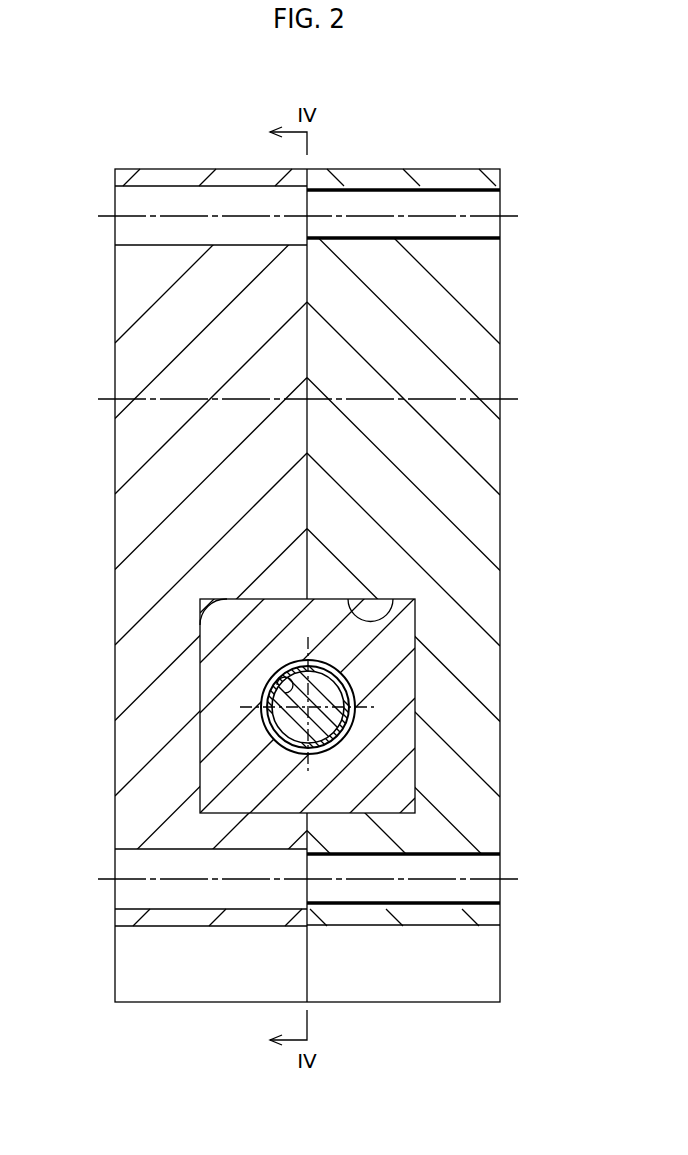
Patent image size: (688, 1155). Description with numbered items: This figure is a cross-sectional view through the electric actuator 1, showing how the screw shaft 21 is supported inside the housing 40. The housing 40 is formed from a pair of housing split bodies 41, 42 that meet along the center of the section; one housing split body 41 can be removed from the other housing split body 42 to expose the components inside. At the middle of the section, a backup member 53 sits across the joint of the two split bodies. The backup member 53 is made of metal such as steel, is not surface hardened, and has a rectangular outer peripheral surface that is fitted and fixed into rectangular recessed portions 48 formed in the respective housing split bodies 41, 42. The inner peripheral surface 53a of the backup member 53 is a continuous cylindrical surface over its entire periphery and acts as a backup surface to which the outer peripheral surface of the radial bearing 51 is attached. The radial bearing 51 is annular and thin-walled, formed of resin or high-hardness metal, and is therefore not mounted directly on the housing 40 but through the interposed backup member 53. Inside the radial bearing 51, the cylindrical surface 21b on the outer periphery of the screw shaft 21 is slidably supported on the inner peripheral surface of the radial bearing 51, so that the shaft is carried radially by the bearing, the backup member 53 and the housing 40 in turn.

The electric actuator 1 is at (552, 157).
The housing 40 is at (421, 168).
The housing split body 41 is at (143, 357).
The housing split body 42 is at (477, 357).
The rectangular recessed portion 48 is at (200, 625).
The backup member 53 is at (388, 647).
The inner peripheral surface 53a is at (268, 690).
The radial bearing 51 is at (355, 693).
The screw shaft 21 is at (346, 748).
The cylindrical surface 21b is at (270, 733).